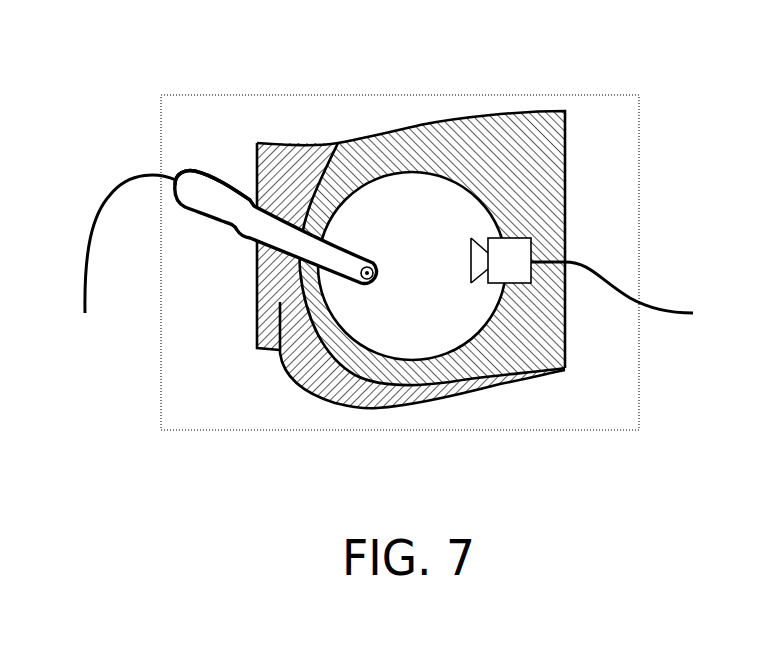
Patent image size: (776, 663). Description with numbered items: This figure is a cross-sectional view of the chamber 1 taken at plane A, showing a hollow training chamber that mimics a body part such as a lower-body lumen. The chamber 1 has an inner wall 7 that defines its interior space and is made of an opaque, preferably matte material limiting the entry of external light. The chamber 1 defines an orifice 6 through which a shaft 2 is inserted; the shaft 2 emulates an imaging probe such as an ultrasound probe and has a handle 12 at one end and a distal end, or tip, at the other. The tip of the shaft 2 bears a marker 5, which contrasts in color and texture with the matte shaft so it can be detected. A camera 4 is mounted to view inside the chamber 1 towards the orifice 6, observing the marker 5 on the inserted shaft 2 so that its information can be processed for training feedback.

The chamber 1 is at (411, 209).
The shaft 2 is at (236, 186).
The camera 4 is at (516, 250).
The marker 5 is at (373, 258).
The orifice 6 is at (333, 236).
The inner wall 7 is at (367, 352).
The handle 12 is at (208, 194).
The plane A is at (632, 118).